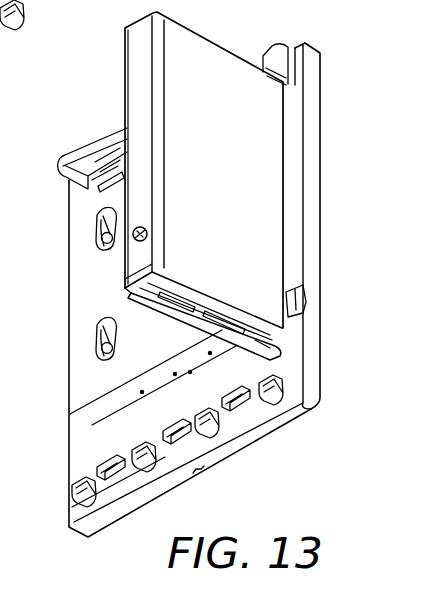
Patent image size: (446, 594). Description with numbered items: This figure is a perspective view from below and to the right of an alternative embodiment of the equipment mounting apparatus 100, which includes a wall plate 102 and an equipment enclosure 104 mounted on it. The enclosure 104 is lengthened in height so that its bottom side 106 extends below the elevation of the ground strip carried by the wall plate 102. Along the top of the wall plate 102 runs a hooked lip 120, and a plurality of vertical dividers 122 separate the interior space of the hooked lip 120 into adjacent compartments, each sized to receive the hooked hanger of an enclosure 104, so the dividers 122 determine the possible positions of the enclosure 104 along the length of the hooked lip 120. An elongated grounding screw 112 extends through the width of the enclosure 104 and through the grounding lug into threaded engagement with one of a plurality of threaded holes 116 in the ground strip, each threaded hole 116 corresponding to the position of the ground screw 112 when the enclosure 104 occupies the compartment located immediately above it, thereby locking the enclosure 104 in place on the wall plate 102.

The equipment mounting apparatus 100 is at (332, 63).
The wall plate 102 is at (310, 100).
The equipment enclosure 104 is at (142, 58).
The bottom side 106 is at (260, 347).
The grounding screw 112 is at (133, 242).
The threaded holes 116 is at (72, 448).
The hooked lip 120 is at (90, 153).
The vertical dividers 122 is at (123, 183).